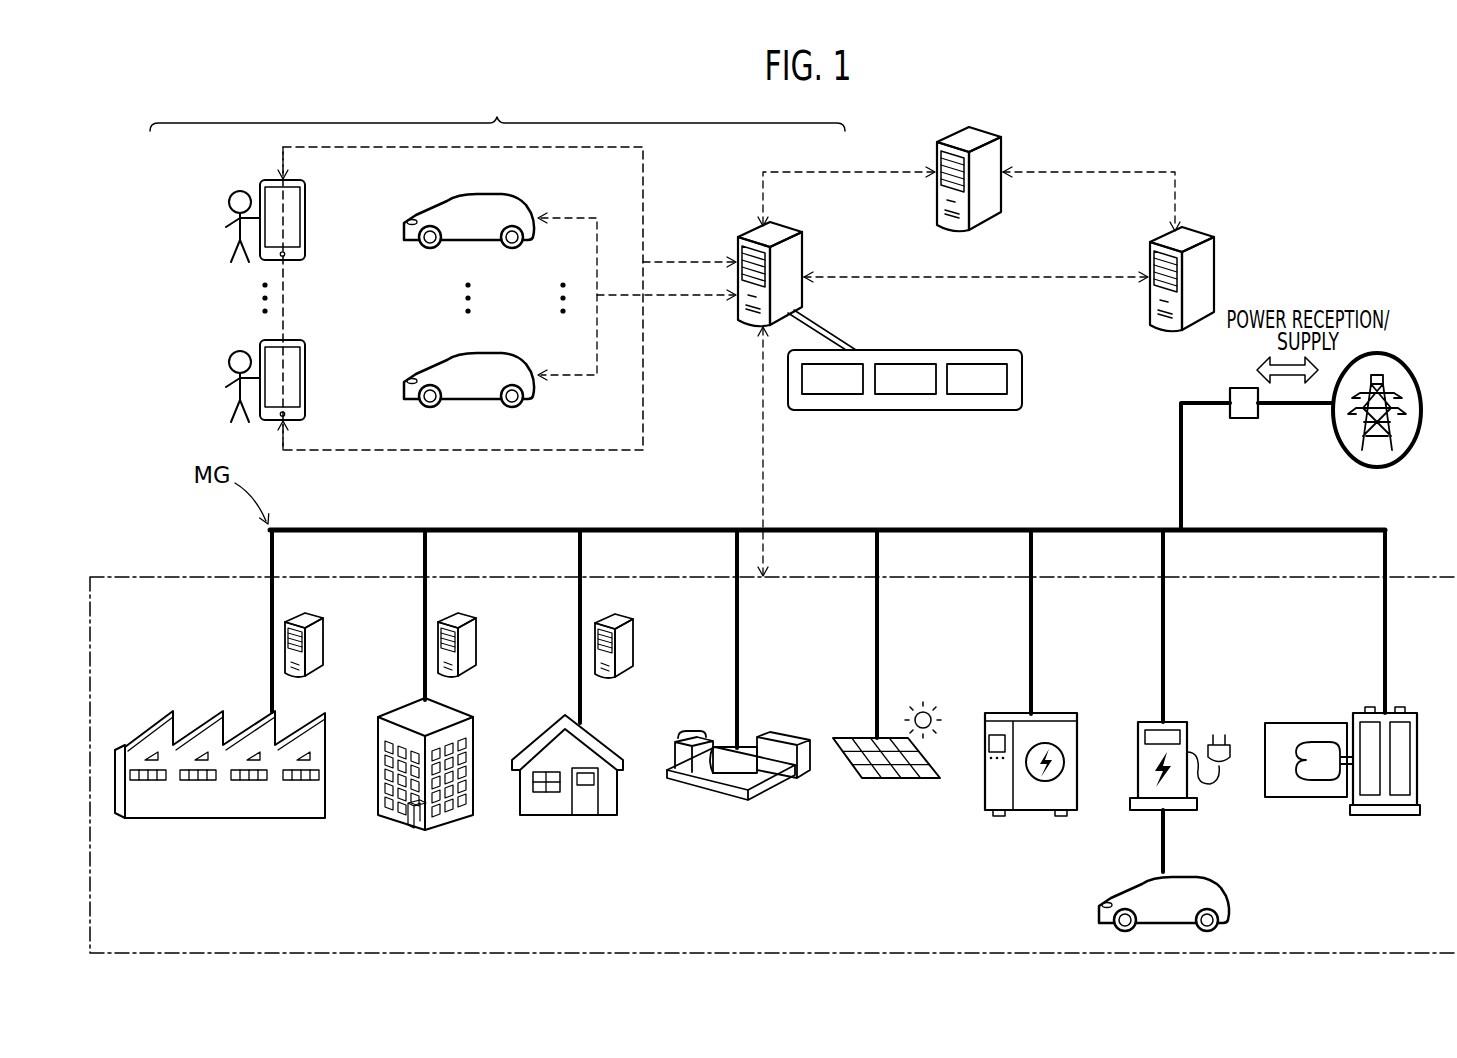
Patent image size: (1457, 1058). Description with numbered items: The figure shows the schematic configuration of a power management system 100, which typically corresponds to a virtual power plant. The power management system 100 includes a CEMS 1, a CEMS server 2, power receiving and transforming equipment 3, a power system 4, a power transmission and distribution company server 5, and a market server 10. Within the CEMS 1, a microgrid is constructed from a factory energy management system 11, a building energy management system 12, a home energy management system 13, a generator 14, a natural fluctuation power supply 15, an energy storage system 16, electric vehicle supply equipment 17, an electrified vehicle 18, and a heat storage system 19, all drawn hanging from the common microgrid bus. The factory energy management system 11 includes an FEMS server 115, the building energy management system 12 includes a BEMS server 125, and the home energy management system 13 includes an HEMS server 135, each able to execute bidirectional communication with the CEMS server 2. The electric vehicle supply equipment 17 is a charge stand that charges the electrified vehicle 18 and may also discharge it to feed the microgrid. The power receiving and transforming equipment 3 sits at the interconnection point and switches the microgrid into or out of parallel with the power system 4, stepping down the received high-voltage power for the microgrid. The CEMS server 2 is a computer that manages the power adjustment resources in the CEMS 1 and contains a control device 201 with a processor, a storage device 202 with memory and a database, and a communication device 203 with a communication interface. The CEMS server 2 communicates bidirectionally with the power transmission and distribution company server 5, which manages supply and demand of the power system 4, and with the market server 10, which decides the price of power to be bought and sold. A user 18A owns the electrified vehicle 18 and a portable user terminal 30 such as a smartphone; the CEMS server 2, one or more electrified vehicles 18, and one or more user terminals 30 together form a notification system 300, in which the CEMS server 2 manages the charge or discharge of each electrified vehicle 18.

The notification system 300 is at (497, 267).
The user 18A is at (228, 203).
The user terminal 30 is at (307, 203).
The electrified vehicle 18 is at (487, 194).
The CEMS server 2 is at (795, 222).
The market server 10 is at (985, 127).
The power transmission and distribution company server 5 is at (1195, 226).
The power management system 100 is at (1337, 195).
The power system 4 is at (1397, 360).
The power receiving and transforming equipment 3 is at (1261, 412).
The control device 201 is at (832, 395).
The storage device 202 is at (905, 395).
The communication device 203 is at (978, 395).
The CEMS 1 is at (176, 577).
The FEMS server 115 is at (313, 618).
The BEMS server 125 is at (466, 618).
The HEMS server 135 is at (622, 615).
The factory energy management system 11 is at (161, 709).
The building energy management system 12 is at (448, 707).
The home energy management system 13 is at (603, 741).
The generator 14 is at (770, 735).
The natural fluctuation power supply 15 is at (848, 735).
The energy storage system 16 is at (1058, 712).
The electric vehicle supply equipment 17 is at (1180, 722).
The heat storage system 19 is at (1405, 712).